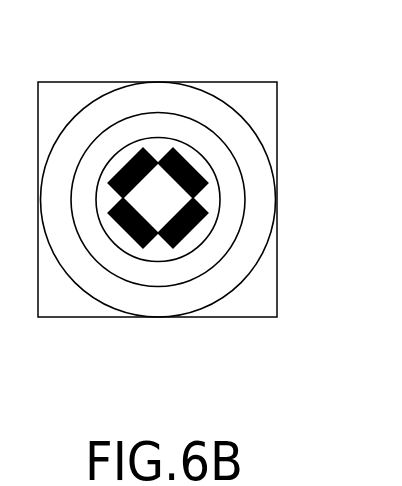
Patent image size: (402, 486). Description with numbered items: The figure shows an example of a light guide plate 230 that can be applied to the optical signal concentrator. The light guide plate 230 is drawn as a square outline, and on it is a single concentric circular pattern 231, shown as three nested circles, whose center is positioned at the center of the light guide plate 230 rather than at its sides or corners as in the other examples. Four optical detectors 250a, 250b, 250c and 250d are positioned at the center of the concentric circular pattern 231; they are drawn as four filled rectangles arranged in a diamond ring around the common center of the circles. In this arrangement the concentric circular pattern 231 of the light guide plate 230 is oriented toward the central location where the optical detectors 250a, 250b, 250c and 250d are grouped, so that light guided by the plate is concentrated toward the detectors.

The light guide plate 230 is at (148, 55).
The concentric circular pattern 231 is at (258, 138).
The optical detector 250a is at (123, 168).
The optical detector 250b is at (183, 153).
The optical detector 250c is at (197, 224).
The optical detector 250d is at (128, 235).